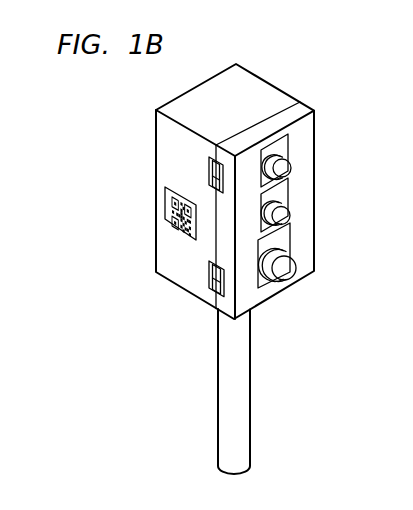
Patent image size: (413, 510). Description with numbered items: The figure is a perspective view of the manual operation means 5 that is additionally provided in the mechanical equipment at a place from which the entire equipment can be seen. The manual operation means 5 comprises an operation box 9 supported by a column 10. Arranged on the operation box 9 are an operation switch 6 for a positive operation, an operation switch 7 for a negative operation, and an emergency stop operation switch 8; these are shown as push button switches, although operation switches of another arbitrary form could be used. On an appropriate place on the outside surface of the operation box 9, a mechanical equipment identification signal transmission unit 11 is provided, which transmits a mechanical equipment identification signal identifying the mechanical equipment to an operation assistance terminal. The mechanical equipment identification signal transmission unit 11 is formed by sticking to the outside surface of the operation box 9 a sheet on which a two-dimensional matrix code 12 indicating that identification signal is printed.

The manual operation means 5 is at (278, 81).
The operation switch for a positive operation 6 is at (283, 168).
The operation switch for a negative operation 7 is at (283, 216).
The emergency stop operation switch 8 is at (285, 269).
The operation box 9 is at (176, 152).
The column 10 is at (228, 382).
The mechanical equipment identification signal transmission unit 11 is at (164, 205).
The two-dimensional matrix code 12 is at (177, 224).